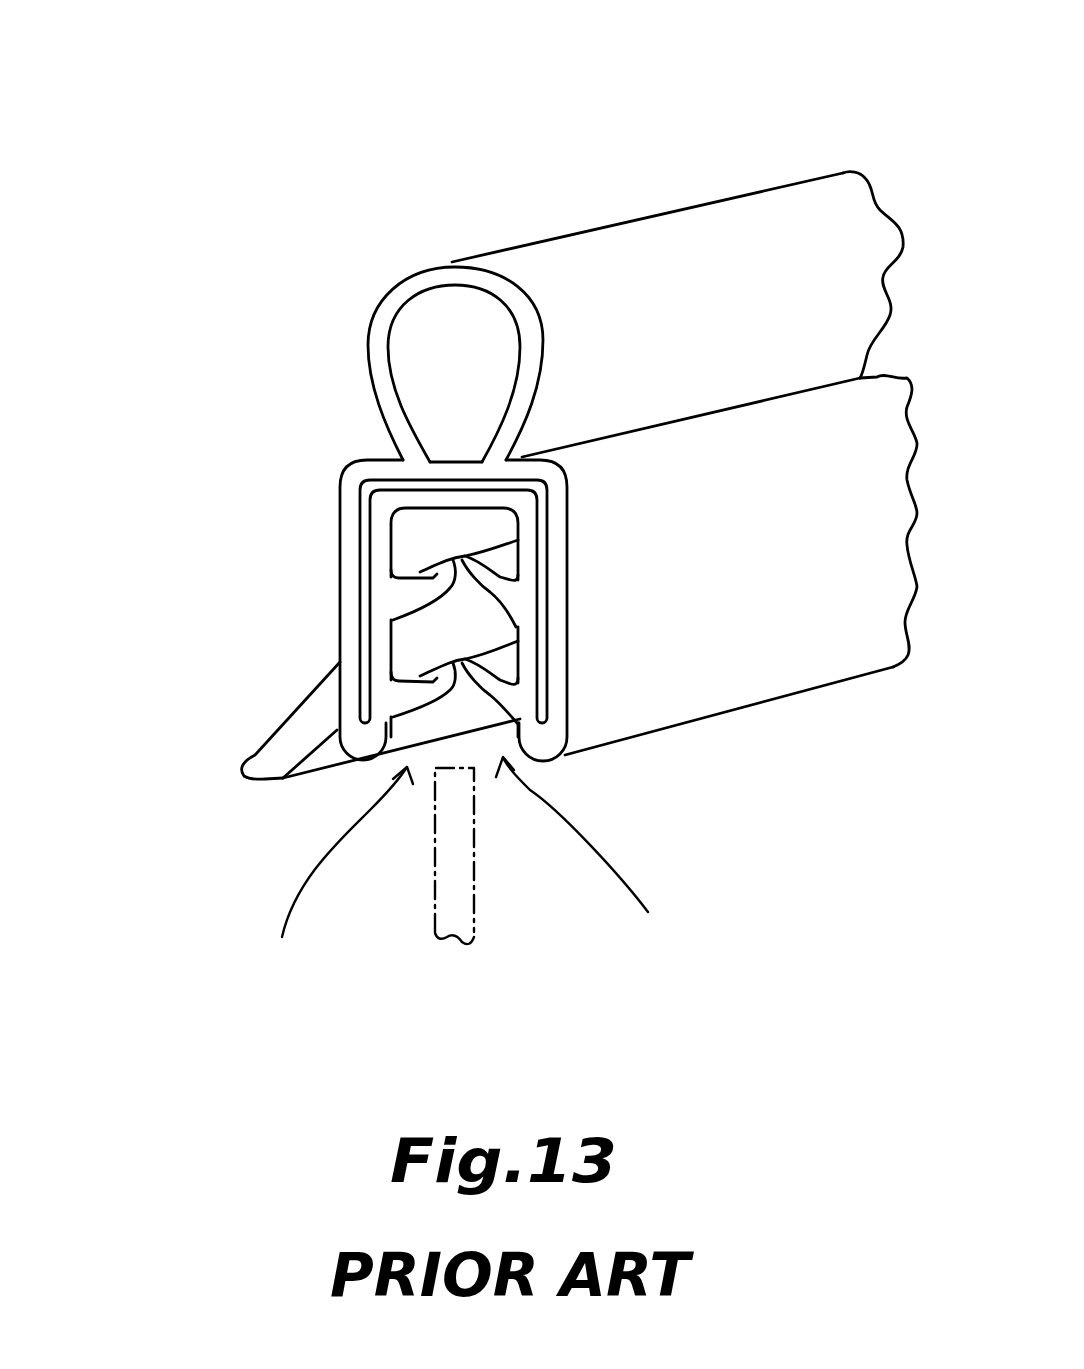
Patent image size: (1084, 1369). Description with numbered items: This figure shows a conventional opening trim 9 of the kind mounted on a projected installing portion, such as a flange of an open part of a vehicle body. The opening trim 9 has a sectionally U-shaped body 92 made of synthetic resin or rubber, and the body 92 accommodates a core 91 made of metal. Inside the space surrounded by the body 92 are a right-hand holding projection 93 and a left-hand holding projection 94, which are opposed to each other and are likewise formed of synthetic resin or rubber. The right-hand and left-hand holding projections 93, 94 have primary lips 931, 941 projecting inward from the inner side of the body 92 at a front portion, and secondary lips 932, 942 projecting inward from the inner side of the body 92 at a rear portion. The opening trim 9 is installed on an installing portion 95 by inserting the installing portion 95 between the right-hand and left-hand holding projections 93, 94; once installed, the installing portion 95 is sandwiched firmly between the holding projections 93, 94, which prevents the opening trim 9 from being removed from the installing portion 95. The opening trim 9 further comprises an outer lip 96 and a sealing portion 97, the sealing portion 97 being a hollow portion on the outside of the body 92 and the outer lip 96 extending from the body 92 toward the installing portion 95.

The opening trim 9 is at (655, 190).
The sealing portion 97 is at (425, 282).
The body 92 is at (557, 573).
The core 91 is at (540, 630).
The secondary lip 942 is at (430, 575).
The primary lip 941 is at (427, 687).
The secondary lip 932 is at (483, 583).
The primary lip 931 is at (483, 683).
The outer lip 96 is at (277, 755).
The left-hand holding projection 94 is at (332, 886).
The right-hand holding projection 93 is at (591, 870).
The installing portion 95 is at (453, 912).